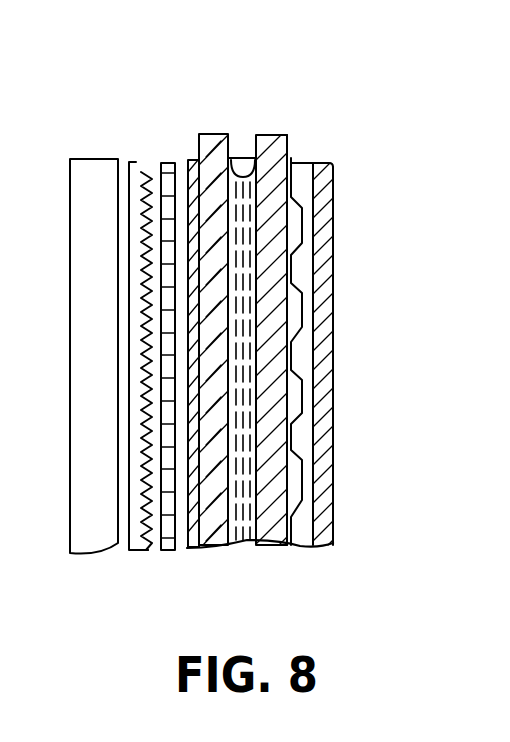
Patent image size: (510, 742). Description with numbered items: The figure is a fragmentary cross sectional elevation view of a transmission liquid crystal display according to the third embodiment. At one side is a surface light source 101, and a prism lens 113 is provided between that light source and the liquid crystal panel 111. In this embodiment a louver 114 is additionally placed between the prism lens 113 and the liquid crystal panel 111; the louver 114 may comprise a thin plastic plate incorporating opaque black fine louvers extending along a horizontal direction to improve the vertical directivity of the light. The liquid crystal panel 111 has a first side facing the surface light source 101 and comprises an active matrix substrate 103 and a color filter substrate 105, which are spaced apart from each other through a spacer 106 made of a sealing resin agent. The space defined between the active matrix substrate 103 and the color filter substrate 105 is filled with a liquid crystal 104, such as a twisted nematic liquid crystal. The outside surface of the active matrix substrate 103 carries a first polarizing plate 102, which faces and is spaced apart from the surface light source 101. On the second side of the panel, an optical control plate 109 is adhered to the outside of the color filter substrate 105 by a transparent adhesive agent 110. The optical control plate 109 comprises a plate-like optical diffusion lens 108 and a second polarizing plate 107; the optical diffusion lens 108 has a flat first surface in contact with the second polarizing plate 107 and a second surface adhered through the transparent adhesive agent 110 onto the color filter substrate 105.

The surface light source 101 is at (84, 241).
The first polarizing plate 102 is at (193, 161).
The active matrix substrate 103 is at (233, 157).
The liquid crystal 104 is at (256, 138).
The color filter substrate 105 is at (286, 140).
The spacer 106 is at (243, 166).
The second polarizing plate 107 is at (334, 313).
The optical diffusion lens 108 is at (298, 186).
The optical control plate 109 is at (311, 556).
The transparent adhesive agent 110 is at (288, 162).
The liquid crystal panel 111 is at (287, 552).
The prism lens 113 is at (141, 168).
The louver 114 is at (163, 166).